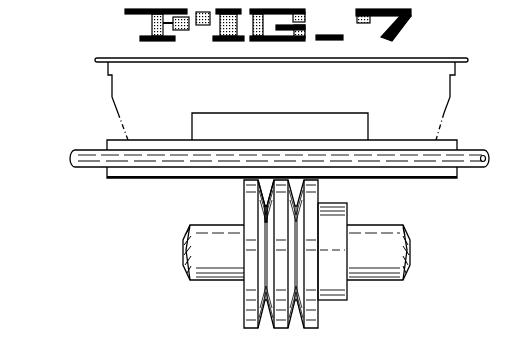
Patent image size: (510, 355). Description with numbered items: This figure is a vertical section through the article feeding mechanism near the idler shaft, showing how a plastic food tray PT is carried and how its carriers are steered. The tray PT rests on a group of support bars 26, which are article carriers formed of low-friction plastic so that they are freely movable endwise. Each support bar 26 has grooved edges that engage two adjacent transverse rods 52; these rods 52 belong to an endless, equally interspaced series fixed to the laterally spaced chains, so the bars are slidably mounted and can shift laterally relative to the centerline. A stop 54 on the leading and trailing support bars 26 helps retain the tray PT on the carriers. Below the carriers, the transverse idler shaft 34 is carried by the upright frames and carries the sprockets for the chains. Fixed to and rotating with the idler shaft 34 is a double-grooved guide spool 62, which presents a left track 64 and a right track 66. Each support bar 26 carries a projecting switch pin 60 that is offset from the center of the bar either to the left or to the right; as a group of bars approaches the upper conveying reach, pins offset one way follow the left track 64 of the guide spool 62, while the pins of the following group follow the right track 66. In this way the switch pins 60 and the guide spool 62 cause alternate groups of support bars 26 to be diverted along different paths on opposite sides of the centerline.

The plastic food tray PT is at (108, 87).
The support bar 26 is at (126, 178).
The idler shaft 34 is at (183, 254).
The transverse rod 52 is at (88, 150).
The stop 54 is at (284, 115).
The switch pin 60 is at (264, 194).
The double-grooved guide spool 62 is at (246, 311).
The left track 64 is at (268, 219).
The right track 66 is at (290, 214).